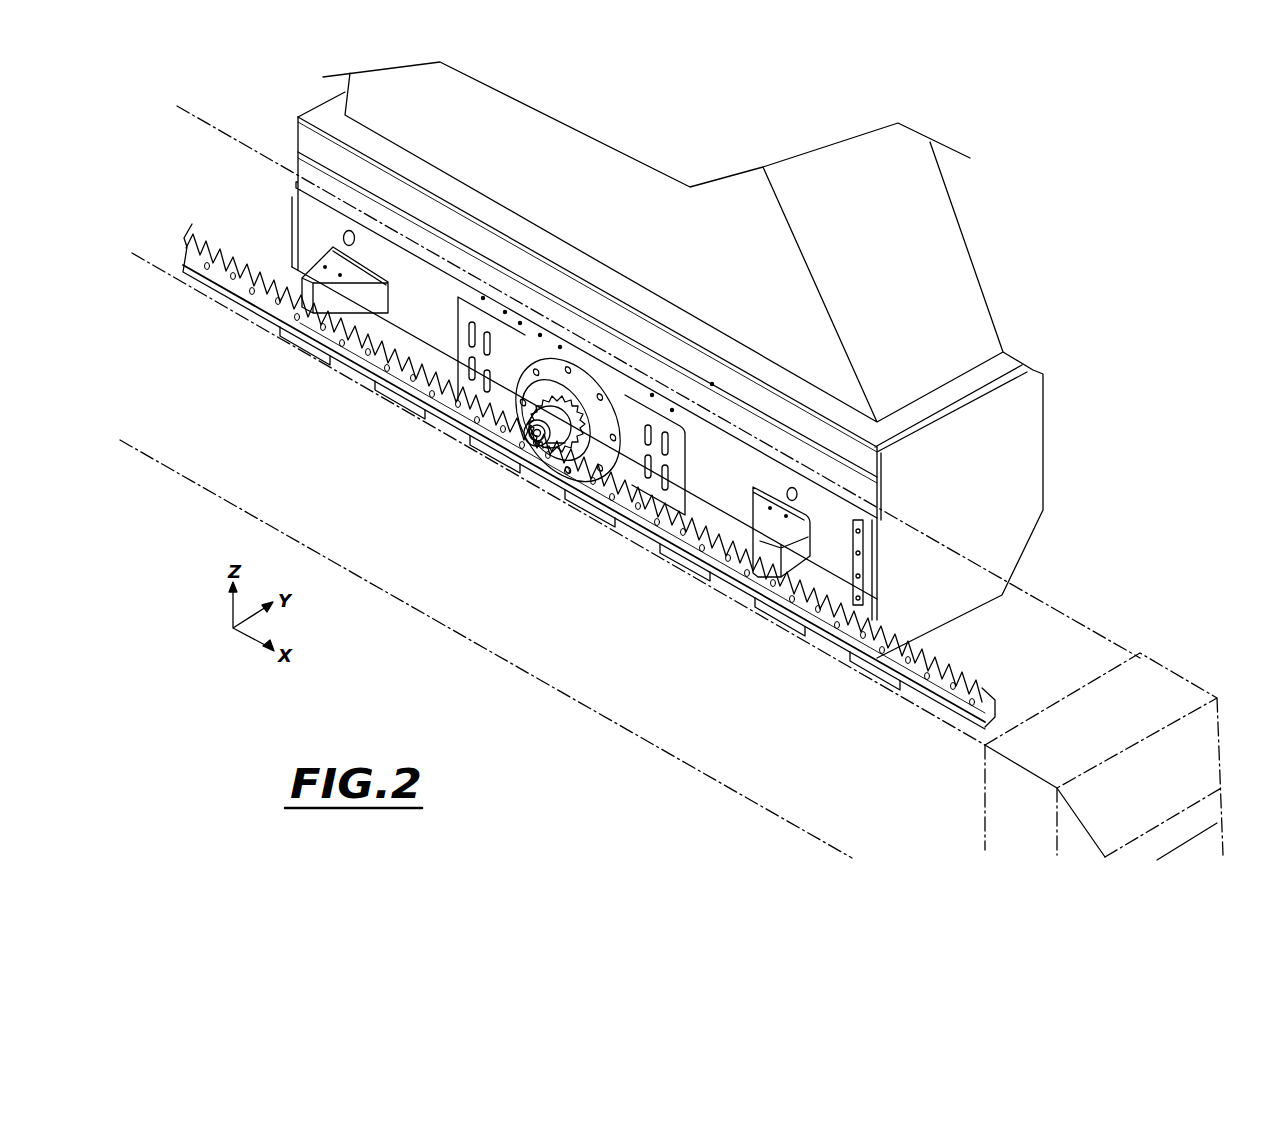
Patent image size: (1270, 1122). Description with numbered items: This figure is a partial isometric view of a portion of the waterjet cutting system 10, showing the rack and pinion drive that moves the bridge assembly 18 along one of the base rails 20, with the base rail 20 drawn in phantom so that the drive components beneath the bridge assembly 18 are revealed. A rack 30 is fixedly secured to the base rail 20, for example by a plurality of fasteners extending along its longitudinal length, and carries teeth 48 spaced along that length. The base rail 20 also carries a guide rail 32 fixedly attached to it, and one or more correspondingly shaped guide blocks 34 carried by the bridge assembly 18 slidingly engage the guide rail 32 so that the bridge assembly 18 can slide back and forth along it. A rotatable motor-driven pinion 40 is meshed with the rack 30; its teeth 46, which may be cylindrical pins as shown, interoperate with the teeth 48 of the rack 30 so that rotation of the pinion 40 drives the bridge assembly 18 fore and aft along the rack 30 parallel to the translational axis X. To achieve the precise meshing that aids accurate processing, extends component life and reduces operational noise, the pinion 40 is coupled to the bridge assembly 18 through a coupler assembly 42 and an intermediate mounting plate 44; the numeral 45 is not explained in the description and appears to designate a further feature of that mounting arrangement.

The waterjet cutting system 10 is at (1087, 225).
The bridge assembly 18 is at (945, 248).
The base rail 20 is at (1173, 682).
The rack 30 is at (383, 356).
The guide rail 32 is at (813, 615).
The guide block 34 is at (800, 572).
The pinion 40 is at (552, 448).
The coupler assembly 42 is at (514, 400).
The intermediate mounting plate 44 is at (660, 482).
The adjustment slot 45 is at (663, 497).
The teeth 46 is at (583, 460).
The teeth 48 is at (403, 360).